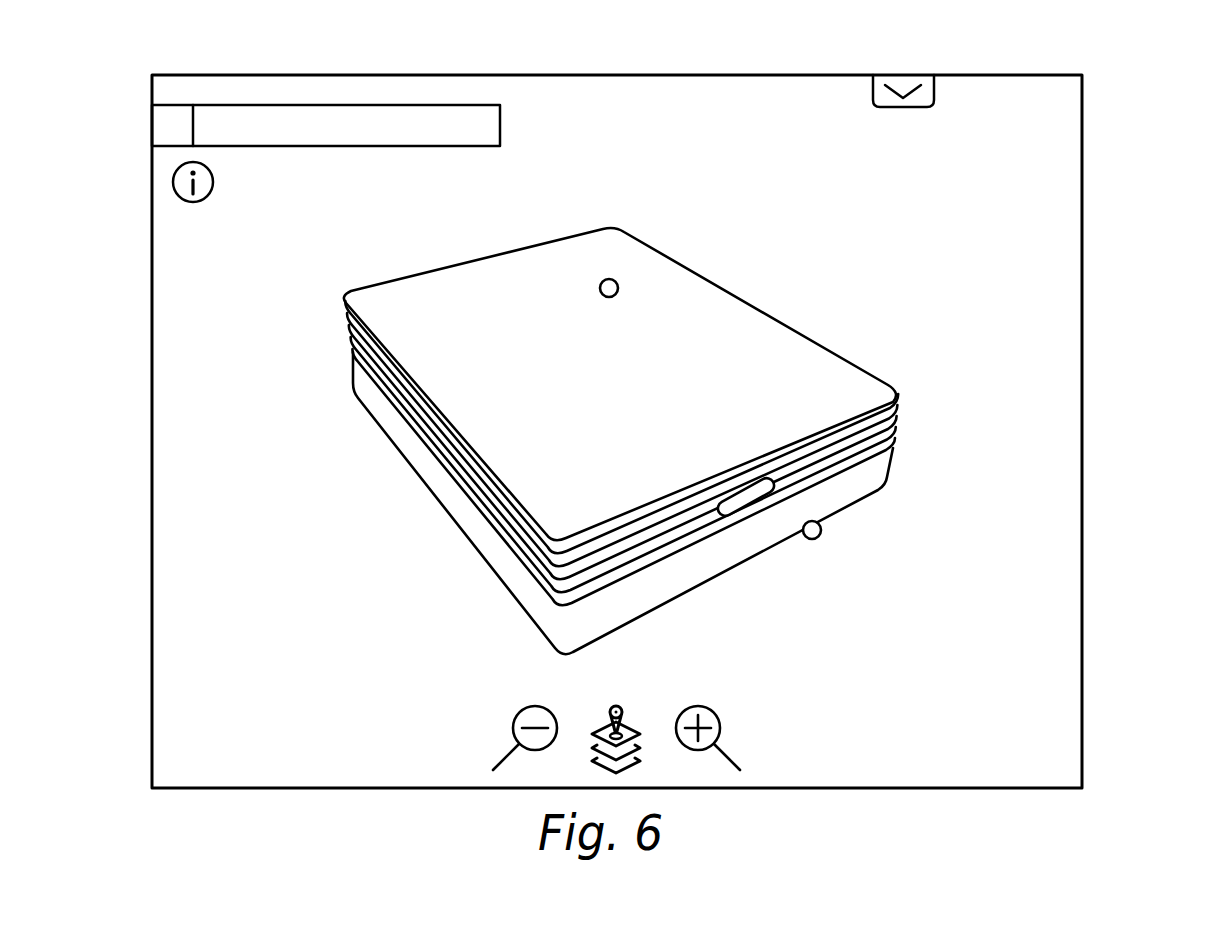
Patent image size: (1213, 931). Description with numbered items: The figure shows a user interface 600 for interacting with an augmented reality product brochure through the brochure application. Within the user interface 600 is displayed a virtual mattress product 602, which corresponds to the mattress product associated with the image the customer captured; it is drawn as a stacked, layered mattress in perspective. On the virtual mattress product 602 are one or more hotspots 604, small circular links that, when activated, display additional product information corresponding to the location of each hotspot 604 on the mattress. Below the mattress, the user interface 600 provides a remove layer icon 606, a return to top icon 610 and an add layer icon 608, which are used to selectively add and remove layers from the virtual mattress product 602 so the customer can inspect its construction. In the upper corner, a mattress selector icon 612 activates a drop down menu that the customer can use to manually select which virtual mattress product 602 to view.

The user interface 600 is at (1090, 250).
The virtual mattress product 602 is at (364, 434).
The hotspots 604 is at (617, 283).
The remove layer icon 606 is at (515, 713).
The add layer icon 608 is at (717, 713).
The return to top icon 610 is at (628, 712).
The mattress selector icon 612 is at (903, 108).